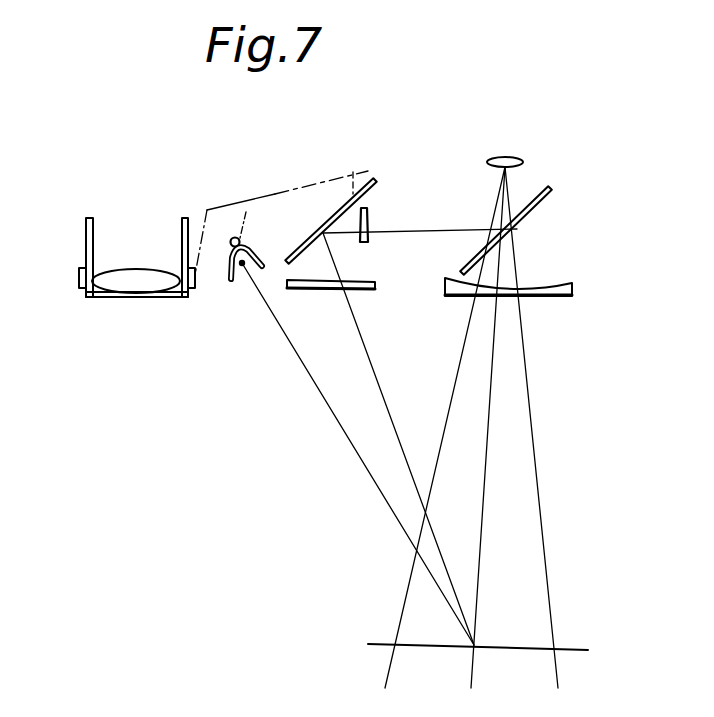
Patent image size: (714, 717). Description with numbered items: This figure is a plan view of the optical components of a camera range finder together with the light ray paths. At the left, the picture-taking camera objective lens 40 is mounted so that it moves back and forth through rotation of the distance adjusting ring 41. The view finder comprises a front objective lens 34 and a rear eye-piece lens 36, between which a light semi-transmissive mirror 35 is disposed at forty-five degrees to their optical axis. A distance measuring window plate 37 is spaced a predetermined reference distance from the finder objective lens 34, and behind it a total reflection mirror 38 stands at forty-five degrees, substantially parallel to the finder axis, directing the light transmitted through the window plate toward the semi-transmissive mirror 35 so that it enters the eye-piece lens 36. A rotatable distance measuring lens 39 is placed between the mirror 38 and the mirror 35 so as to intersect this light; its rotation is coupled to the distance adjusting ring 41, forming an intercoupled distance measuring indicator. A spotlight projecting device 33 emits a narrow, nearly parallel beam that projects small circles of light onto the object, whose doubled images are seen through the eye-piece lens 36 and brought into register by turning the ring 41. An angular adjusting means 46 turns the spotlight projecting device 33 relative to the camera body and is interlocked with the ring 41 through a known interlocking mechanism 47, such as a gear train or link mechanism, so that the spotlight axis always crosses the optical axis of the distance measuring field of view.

The spotlight projecting device 33 is at (263, 253).
The view finder objective lens 34 is at (563, 297).
The light semi-transmissive mirror 35 is at (552, 192).
The eye-piece lens 36 is at (520, 159).
The distance measuring window plate 37 is at (375, 291).
The total reflection mirror 38 is at (323, 227).
The distance measuring lens 39 is at (370, 210).
The camera objective lens 40 is at (122, 270).
The distance adjusting ring 41 is at (80, 276).
The angular adjusting means 46 is at (239, 240).
The interlocking mechanism 47 is at (221, 207).